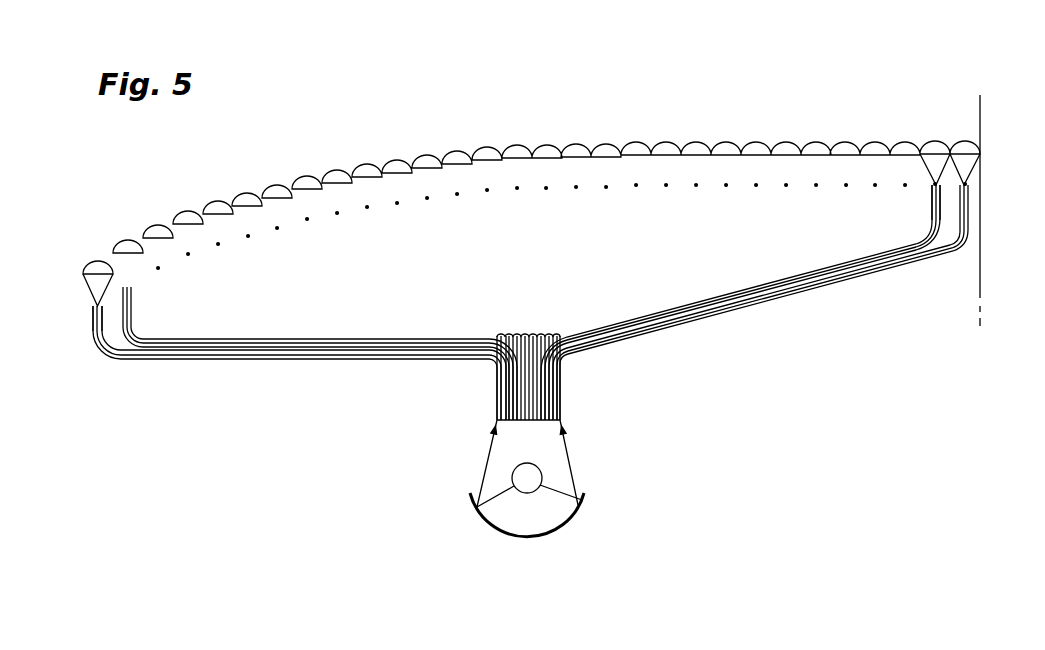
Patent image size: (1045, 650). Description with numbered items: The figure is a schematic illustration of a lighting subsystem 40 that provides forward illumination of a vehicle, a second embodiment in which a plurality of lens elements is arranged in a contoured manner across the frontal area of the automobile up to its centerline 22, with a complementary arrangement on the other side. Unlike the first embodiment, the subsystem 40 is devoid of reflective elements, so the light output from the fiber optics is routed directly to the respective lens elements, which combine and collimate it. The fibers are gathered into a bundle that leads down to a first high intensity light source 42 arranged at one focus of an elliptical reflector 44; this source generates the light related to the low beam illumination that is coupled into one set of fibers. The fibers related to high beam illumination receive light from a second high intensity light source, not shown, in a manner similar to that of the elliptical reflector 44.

The lighting subsystem 40 is at (878, 86).
The centerline 22 is at (983, 100).
The first high intensity light source 42 is at (542, 471).
The elliptical reflector 44 is at (562, 527).